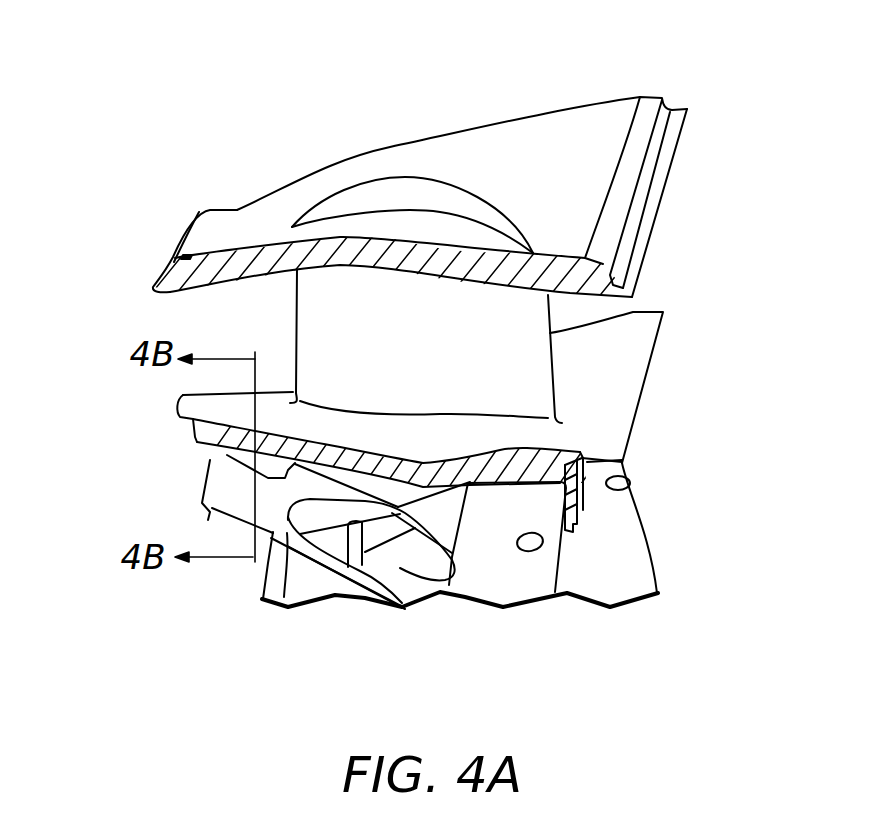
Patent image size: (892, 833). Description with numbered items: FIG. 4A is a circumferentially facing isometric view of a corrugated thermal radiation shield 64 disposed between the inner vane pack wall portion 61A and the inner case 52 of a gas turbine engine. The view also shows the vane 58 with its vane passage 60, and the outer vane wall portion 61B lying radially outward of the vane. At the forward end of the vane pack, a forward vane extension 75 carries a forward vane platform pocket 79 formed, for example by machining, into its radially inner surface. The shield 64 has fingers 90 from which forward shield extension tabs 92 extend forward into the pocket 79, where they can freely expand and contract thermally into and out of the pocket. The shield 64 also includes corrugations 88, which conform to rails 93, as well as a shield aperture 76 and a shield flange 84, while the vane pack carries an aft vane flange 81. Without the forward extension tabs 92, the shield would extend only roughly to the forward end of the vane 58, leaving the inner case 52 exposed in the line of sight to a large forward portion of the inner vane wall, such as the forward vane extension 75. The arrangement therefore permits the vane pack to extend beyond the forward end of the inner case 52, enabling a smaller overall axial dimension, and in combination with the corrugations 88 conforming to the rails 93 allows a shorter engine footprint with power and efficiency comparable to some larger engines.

The inner case 52 is at (698, 558).
The vane 58 is at (434, 345).
The vane passage 60 is at (400, 177).
The inner vane pack wall portion 61A is at (613, 383).
The outer vane wall portion 61B is at (505, 168).
The corrugated shield 64 is at (492, 575).
The forward vane extension 75 is at (197, 395).
The shield aperture 76 is at (403, 562).
The forward vane platform pocket 79 is at (227, 455).
The aft vane flange 81 is at (583, 510).
The shield flange 84 is at (528, 580).
The corrugations 88 is at (368, 488).
The fingers 90 is at (284, 597).
The forward shield extension tabs 92 is at (217, 490).
The rails 93 is at (533, 470).